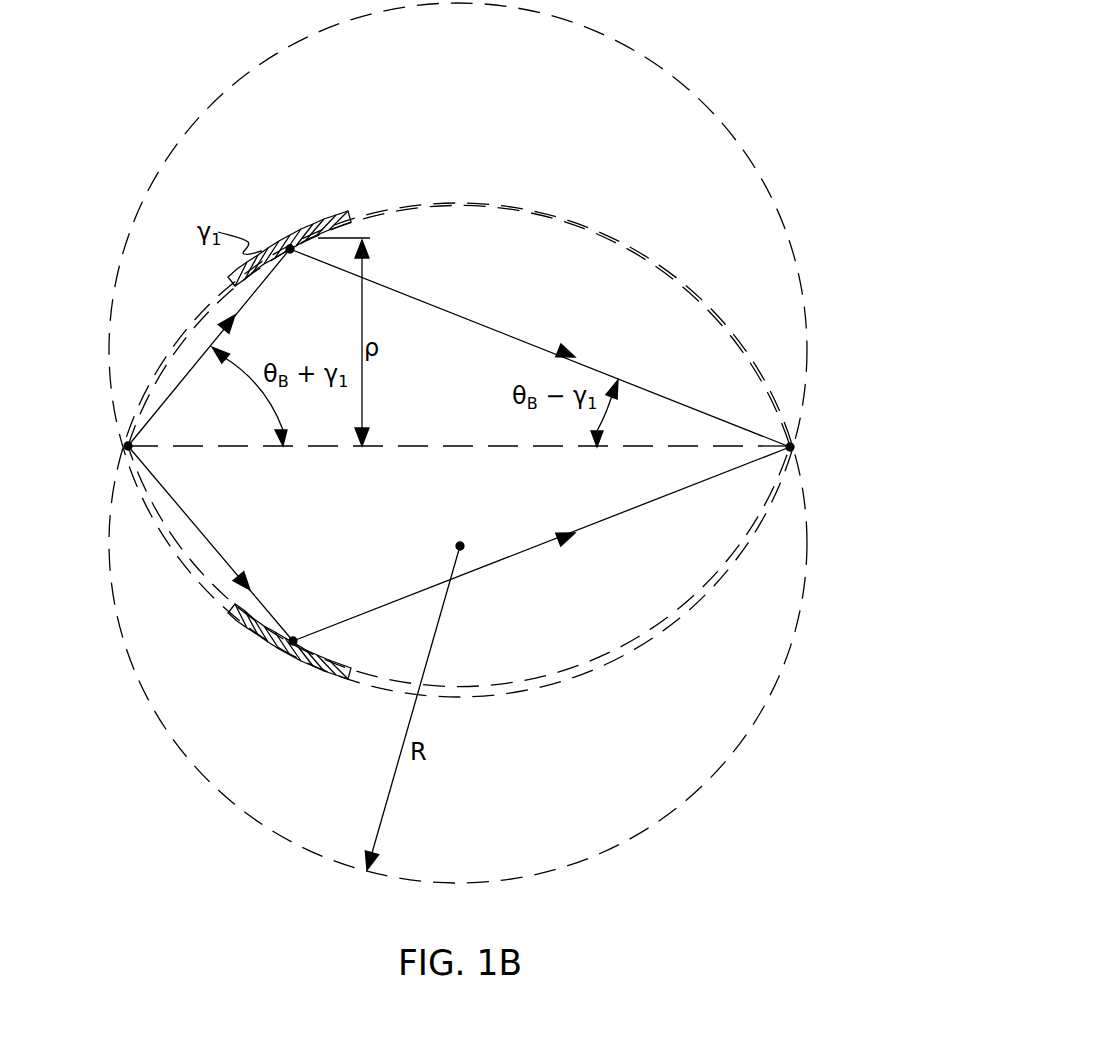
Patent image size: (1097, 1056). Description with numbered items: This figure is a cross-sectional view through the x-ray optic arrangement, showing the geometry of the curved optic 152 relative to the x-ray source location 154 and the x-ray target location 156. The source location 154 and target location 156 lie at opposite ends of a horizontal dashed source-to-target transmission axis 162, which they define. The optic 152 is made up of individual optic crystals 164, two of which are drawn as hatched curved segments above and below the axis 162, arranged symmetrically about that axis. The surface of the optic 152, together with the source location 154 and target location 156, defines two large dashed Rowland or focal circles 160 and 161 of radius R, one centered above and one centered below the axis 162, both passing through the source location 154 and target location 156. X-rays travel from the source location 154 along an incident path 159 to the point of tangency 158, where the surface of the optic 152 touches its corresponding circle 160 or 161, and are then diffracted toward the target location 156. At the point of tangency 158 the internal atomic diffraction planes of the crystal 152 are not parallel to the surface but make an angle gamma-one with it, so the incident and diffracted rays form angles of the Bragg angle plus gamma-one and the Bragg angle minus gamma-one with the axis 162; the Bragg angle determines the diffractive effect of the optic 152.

The curved optic 152 is at (440, 189).
The x-ray source location 154 is at (128, 446).
The x-ray target location 156 is at (792, 447).
The point of tangency 158 is at (293, 252).
The incident x-ray beam 159 is at (181, 382).
The Rowland circle 160 is at (660, 68).
The Rowland circle 161 is at (695, 795).
The source-to-target transmission axis 162 is at (500, 450).
The individual optic crystals 164 is at (334, 218).